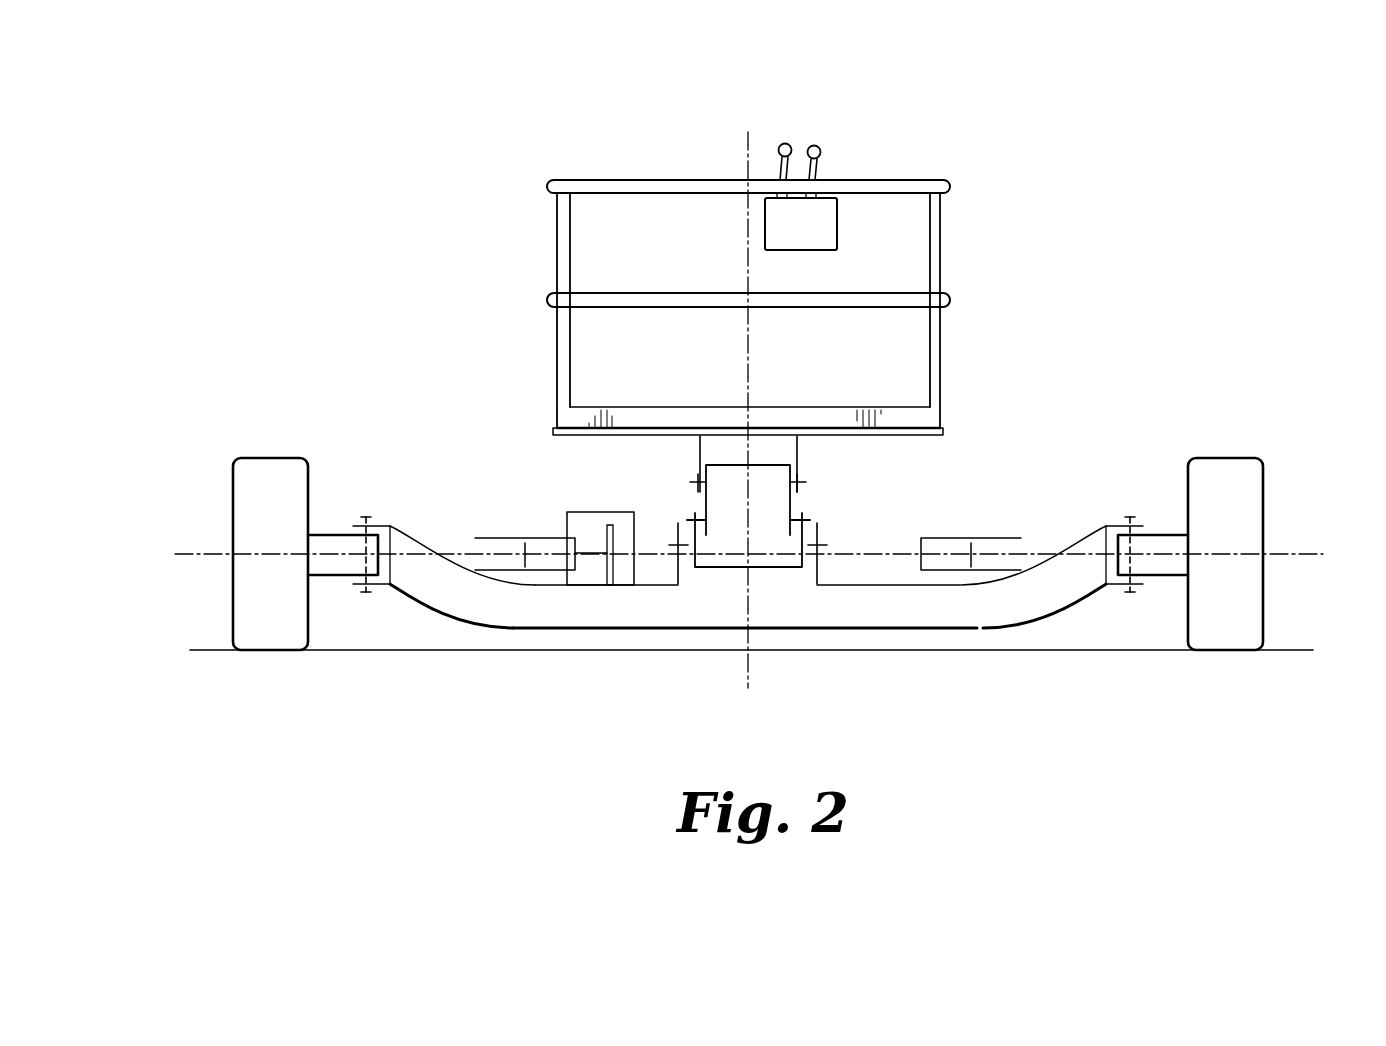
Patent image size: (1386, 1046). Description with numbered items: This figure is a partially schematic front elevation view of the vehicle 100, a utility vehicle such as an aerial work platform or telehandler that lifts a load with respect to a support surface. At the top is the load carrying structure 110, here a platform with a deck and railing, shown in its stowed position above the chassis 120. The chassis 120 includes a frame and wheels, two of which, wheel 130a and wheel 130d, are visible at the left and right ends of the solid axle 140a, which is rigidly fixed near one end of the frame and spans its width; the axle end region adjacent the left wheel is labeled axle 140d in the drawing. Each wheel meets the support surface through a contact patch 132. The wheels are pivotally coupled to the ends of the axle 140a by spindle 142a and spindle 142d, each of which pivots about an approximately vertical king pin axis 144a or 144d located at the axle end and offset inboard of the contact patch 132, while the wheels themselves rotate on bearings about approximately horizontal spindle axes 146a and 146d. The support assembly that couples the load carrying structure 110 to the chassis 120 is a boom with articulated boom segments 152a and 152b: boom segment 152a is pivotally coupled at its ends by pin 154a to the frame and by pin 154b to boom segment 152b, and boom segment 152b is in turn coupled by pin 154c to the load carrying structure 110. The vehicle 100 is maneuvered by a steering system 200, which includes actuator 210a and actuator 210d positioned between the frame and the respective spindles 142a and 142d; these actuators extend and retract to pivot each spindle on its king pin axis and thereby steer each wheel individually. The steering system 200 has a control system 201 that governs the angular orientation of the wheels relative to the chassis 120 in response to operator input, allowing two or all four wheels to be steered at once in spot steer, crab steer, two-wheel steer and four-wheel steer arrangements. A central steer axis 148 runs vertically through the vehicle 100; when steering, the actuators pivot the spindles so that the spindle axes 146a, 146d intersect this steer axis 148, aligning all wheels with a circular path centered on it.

The vehicle 100 is at (1106, 126).
The load carrying structure 110 is at (893, 182).
The chassis 120 is at (612, 628).
The wheel 130a is at (1228, 458).
The wheel 130d is at (268, 458).
The contact patch 132 is at (268, 651).
The solid axle 140a is at (845, 607).
The wheel arm 140d is at (462, 577).
The spindle 142a is at (1162, 530).
The spindle 142d is at (330, 533).
The king pin axis 144a is at (1128, 515).
The king pin axis 144d is at (368, 518).
The spindle axis 146a is at (1307, 553).
The spindle axis 146d is at (188, 553).
The steer axis 148 is at (745, 148).
The boom segment 152a is at (800, 588).
The boom segment 152b is at (750, 485).
The pin 154a is at (820, 545).
The pin 154b is at (810, 520).
The pin 154c is at (692, 483).
The steering system 200 is at (628, 541).
The control system 201 is at (839, 154).
The actuator 210a is at (948, 572).
The actuator 210d is at (541, 568).